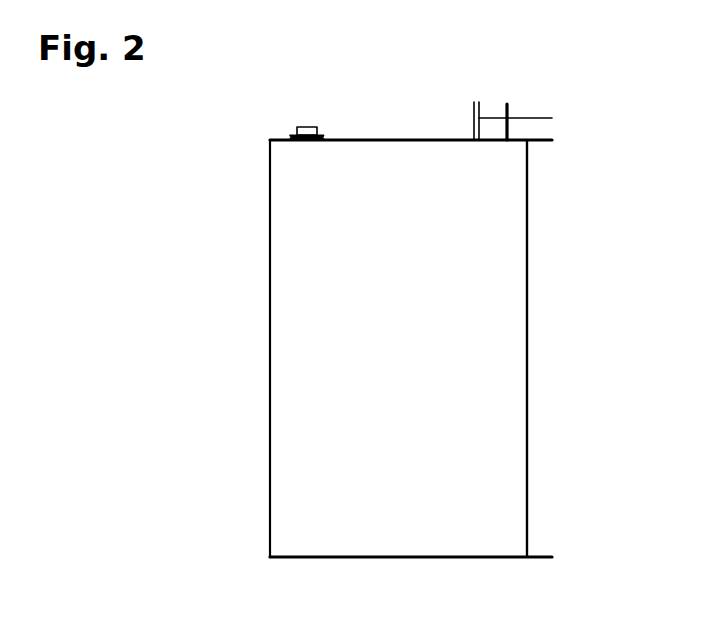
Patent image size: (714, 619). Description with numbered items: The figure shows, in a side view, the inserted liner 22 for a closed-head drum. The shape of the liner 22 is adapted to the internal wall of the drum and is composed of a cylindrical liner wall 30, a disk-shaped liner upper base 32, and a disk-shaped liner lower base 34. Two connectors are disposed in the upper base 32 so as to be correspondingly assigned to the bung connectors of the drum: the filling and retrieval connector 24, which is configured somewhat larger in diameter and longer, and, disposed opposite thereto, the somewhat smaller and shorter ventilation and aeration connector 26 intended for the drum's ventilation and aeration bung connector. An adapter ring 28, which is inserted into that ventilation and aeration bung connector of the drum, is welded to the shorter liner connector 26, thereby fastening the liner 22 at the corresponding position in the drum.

The liner 22 is at (198, 253).
The filling and retrieval connector 24 is at (491, 125).
The ventilation and aeration connector 26 is at (298, 138).
The adapter ring 28 is at (305, 125).
The liner wall 30 is at (492, 290).
The liner upper base 32 is at (398, 138).
The liner lower base 34 is at (423, 558).